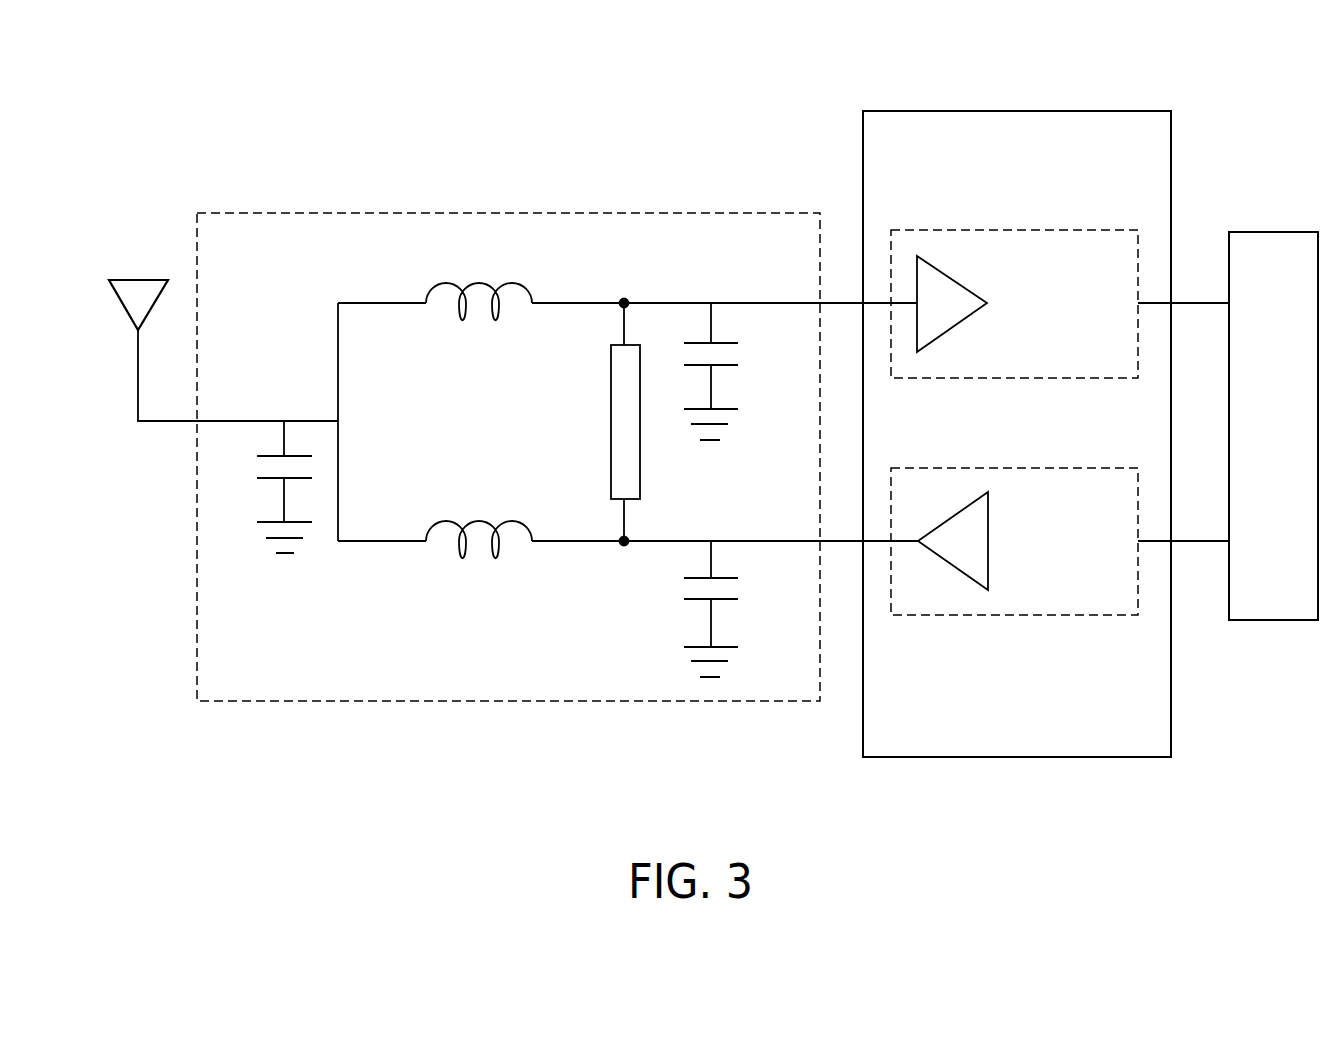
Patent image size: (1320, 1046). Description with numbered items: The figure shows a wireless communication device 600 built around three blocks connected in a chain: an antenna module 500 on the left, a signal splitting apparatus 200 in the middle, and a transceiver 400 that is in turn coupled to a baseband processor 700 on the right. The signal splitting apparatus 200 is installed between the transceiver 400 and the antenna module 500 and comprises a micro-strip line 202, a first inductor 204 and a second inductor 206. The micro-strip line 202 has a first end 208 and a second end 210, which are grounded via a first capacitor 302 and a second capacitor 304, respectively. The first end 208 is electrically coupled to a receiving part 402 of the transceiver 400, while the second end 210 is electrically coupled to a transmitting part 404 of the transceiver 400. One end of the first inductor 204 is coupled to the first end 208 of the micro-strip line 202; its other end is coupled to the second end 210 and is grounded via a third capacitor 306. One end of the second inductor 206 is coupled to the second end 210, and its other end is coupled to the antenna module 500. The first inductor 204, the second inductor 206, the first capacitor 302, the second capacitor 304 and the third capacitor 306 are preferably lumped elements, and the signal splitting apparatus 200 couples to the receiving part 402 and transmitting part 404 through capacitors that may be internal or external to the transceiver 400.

The signal splitting apparatus 200 is at (496, 212).
The micro-strip line 202 is at (609, 420).
The first inductor 204 is at (479, 284).
The second inductor 206 is at (479, 523).
The first end 208 is at (624, 299).
The second end 210 is at (625, 546).
The first capacitor 302 is at (733, 371).
The second capacitor 304 is at (733, 609).
The third capacitor 306 is at (261, 487).
The transceiver 400 is at (988, 110).
The receiving part 402 is at (1060, 229).
The transmitting part 404 is at (1060, 617).
The antenna module 500 is at (121, 307).
The wireless communication device 600 is at (848, 788).
The baseband processor 700 is at (1245, 231).